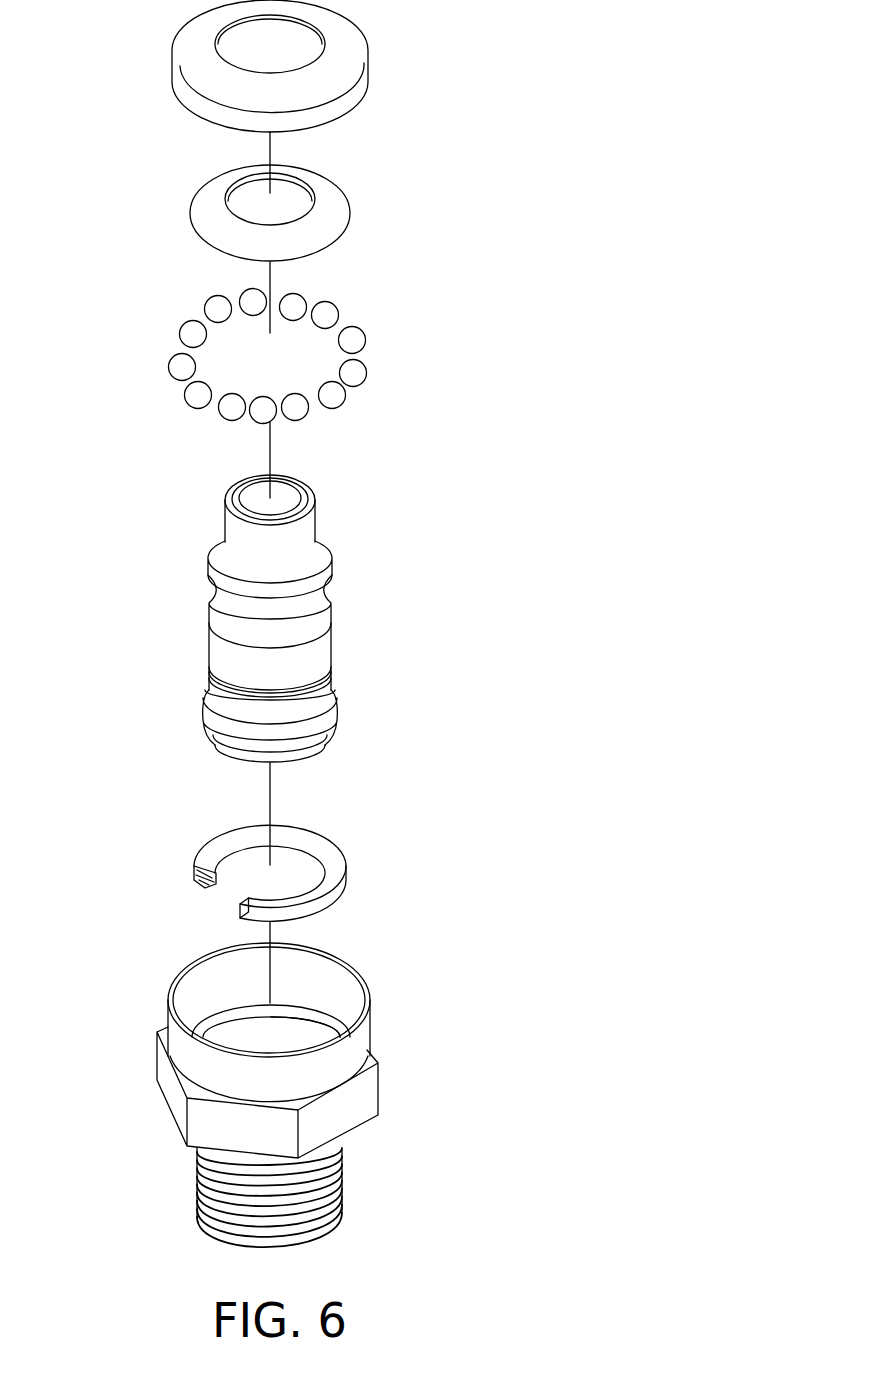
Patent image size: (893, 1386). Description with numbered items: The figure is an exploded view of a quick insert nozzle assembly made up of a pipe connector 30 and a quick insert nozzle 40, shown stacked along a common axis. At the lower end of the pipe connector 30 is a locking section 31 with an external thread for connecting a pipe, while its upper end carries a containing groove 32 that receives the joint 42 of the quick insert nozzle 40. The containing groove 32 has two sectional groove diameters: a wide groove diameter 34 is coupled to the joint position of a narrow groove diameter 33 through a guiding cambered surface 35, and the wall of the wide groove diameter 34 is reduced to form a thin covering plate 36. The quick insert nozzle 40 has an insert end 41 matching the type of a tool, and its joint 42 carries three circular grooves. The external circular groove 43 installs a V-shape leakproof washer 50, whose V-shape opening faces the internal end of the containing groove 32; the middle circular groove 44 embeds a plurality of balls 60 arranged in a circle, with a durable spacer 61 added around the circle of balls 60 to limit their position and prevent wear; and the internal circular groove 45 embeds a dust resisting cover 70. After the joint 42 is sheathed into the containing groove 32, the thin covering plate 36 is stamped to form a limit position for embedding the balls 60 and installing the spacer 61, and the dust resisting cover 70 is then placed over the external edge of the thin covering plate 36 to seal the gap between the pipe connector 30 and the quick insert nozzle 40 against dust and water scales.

The pipe connector 30 is at (279, 1077).
The locking section 31 is at (198, 1193).
The containing groove 32 is at (250, 1040).
The narrow groove diameter 33 is at (312, 1022).
The wide groove diameter 34 is at (325, 980).
The guiding cambered surface 35 is at (203, 1031).
The thin covering plate 36 is at (217, 988).
The quick insert nozzle 40 is at (274, 632).
The insert end 41 is at (233, 562).
The joint 42 is at (335, 705).
The external circular groove 43 is at (293, 753).
The middle circular groove 44 is at (212, 708).
The internal circular groove 45 is at (275, 686).
The V-shape leakproof washer 50 is at (345, 873).
The balls 60 is at (197, 335).
The spacer 61 is at (327, 218).
The dust resisting cover 70 is at (362, 88).